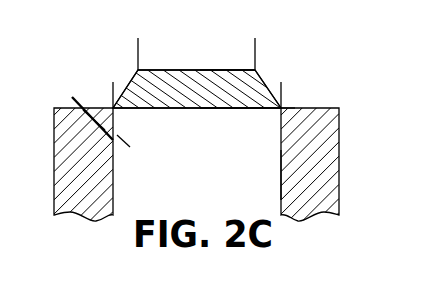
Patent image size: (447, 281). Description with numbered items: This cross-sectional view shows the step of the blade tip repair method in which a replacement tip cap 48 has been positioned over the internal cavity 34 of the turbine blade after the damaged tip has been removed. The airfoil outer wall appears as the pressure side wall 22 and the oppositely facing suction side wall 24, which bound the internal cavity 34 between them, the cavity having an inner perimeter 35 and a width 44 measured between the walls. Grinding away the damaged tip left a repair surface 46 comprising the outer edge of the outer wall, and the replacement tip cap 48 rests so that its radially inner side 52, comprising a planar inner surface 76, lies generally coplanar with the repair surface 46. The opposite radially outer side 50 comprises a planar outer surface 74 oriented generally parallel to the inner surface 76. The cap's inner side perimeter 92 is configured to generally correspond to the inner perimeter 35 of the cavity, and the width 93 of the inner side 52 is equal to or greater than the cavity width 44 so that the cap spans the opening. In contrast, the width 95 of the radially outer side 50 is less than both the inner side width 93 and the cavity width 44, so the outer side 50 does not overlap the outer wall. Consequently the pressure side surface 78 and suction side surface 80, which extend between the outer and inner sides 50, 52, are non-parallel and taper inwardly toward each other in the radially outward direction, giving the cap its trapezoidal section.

The pressure side wall 22 is at (53, 152).
The suction side wall 24 is at (341, 197).
The internal cavity 34 is at (208, 163).
The inner perimeter of the internal cavity 35 is at (280, 173).
The width of the internal cavity 44 is at (280, 197).
The repair surface 46 is at (65, 108).
The replacement tip cap 48 is at (186, 88).
The radially outer side 50 is at (227, 69).
The radially inner side 52 is at (220, 110).
The planar outer surface 74 is at (168, 69).
The planar inner surface 76 is at (177, 110).
The pressure side surface 78 is at (131, 80).
The suction side surface 80 is at (265, 83).
The inner side perimeter 92 is at (283, 107).
The width of the inner side 93 is at (277, 95).
The width of the radially outer side 95 is at (139, 50).